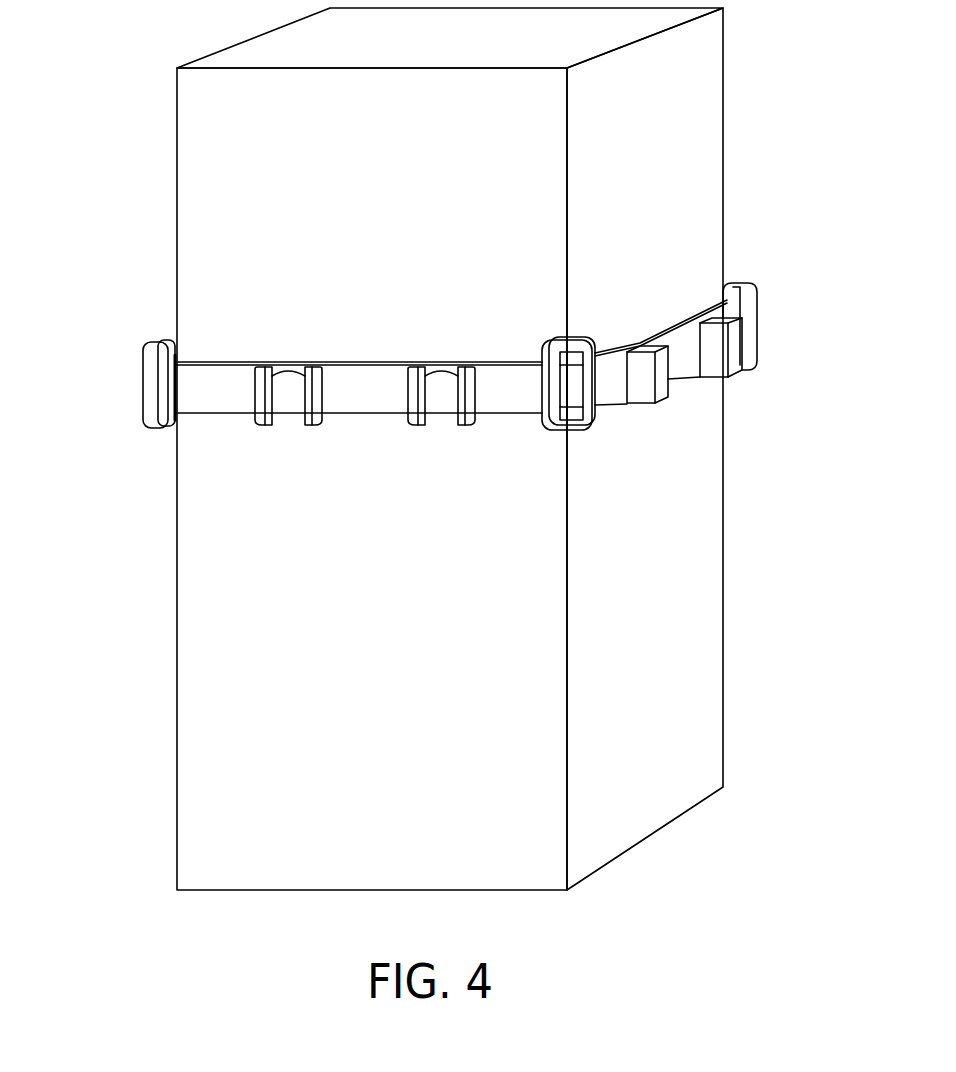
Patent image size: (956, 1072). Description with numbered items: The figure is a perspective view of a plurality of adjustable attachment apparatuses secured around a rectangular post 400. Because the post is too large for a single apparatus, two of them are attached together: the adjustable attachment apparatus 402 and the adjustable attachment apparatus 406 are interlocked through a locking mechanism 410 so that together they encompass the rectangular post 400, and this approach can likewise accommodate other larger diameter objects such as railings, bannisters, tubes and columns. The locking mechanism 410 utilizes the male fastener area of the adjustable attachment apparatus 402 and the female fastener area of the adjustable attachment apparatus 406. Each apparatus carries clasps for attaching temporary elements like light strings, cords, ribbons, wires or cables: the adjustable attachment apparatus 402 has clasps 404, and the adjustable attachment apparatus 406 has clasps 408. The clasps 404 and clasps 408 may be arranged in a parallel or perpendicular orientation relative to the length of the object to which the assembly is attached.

The rectangular post 400 is at (668, 104).
The adjustable attachment apparatus 402 is at (658, 323).
The clasps 404 is at (655, 398).
The adjustable attachment apparatus 406 is at (207, 377).
The clasps 408 is at (276, 395).
The locking mechanism 410 is at (570, 363).